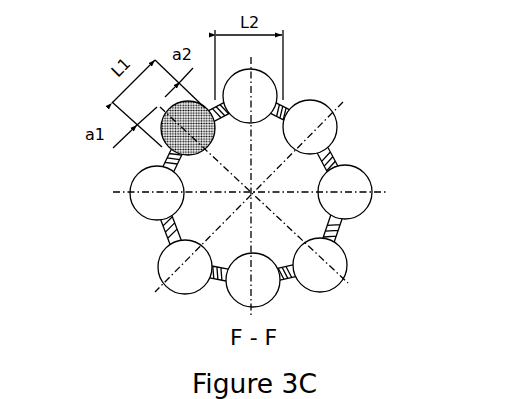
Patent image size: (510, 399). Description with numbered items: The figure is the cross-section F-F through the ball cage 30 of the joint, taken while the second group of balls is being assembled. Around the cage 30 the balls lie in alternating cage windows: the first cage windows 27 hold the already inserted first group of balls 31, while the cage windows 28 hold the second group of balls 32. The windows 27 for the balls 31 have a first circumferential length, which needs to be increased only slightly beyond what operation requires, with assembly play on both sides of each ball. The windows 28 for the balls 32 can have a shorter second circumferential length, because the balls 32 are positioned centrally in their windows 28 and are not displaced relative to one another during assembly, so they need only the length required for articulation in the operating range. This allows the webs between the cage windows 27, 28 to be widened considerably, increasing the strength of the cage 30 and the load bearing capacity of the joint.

The first cage windows 27 is at (345, 246).
The cage windows 28 is at (350, 162).
The cage 30 is at (347, 151).
The first group of balls 31 is at (342, 265).
The second group of balls 32 is at (366, 185).